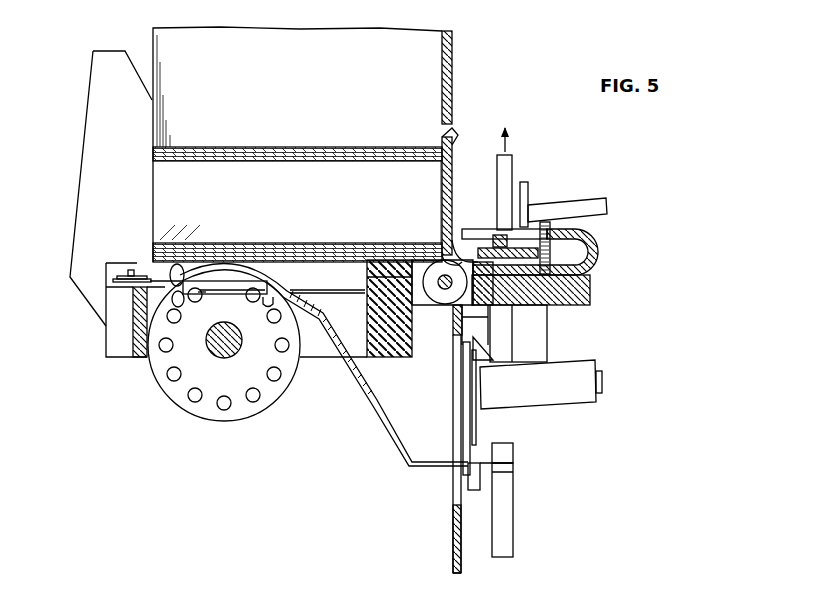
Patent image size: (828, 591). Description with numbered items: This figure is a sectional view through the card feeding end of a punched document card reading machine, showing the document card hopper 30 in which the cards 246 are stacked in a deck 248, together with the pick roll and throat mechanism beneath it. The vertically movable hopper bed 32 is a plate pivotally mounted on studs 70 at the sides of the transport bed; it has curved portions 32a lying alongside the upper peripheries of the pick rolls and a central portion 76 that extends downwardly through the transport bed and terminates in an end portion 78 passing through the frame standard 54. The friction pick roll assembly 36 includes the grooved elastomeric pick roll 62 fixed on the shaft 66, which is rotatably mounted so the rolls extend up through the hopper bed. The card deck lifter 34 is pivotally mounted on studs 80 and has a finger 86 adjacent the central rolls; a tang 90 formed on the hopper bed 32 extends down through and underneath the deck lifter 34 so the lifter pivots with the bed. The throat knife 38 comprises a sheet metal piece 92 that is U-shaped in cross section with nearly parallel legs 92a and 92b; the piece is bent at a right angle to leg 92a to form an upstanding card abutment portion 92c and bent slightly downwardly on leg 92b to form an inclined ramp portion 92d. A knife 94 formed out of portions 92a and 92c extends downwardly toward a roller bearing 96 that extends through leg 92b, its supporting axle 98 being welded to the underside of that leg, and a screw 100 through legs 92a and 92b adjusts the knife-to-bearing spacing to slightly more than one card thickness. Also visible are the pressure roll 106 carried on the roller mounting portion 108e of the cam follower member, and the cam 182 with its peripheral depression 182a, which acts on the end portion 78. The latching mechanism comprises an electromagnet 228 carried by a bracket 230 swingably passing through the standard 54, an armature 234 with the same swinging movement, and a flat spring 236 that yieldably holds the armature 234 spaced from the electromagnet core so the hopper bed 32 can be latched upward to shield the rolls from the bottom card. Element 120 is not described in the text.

The document card hopper 30 is at (458, 58).
The deck 248 is at (229, 146).
The cards 246 is at (300, 258).
The throat knife 38 is at (459, 152).
The upstanding card abutment portion 92c is at (440, 178).
The leg 92a is at (504, 200).
The knife 94 is at (478, 232).
The roller bearing 96 is at (443, 268).
The inclined ramp portion 92d is at (382, 262).
The leg 92b is at (572, 305).
The sheet metal piece 92 is at (600, 257).
The screw 100 is at (552, 224).
The pressure roll 106 is at (512, 160).
The stop bar 120 is at (530, 191).
The roller mounting portion 108e is at (578, 200).
The studs 70 is at (130, 268).
The card deck lifter 34 is at (178, 284).
The friction pick roll assembly 36 is at (148, 381).
The pick roll 62 is at (180, 394).
The shaft 66 is at (223, 352).
The finger 86 is at (202, 297).
The tang 90 is at (274, 298).
The studs 80 is at (330, 296).
The hopper bed 32 is at (266, 262).
The curved portions 32a is at (218, 262).
The central portion 76 is at (362, 383).
The supporting axle 98 is at (445, 292).
The flat spring 236 is at (490, 406).
The electromagnet 228 is at (580, 403).
The armature 234 is at (474, 445).
The bracket 230 is at (470, 482).
The standard 54 is at (452, 535).
The end portion 78 is at (513, 455).
The peripheral depression 182a is at (514, 473).
The cam 182 is at (513, 545).